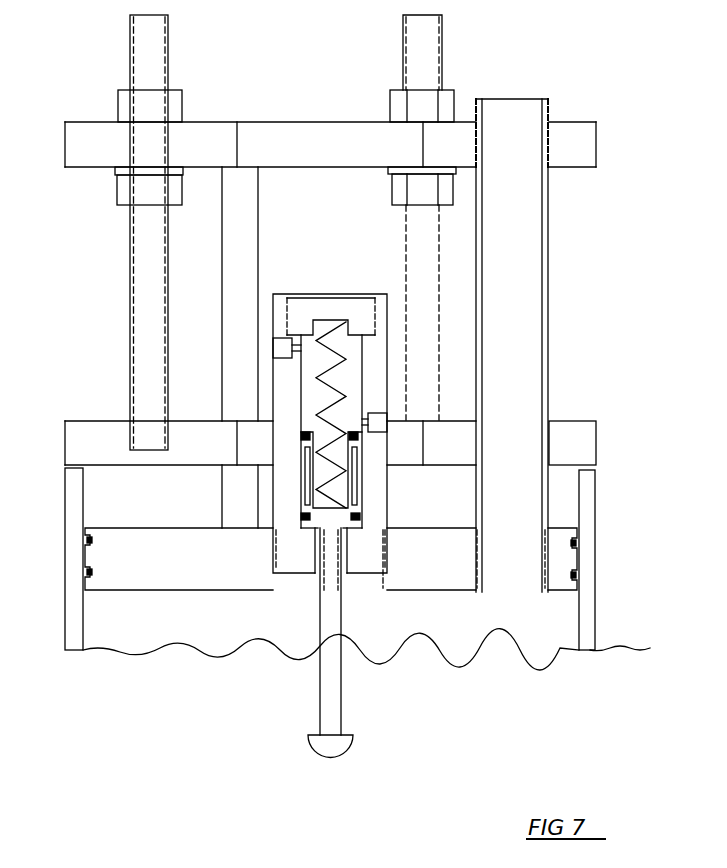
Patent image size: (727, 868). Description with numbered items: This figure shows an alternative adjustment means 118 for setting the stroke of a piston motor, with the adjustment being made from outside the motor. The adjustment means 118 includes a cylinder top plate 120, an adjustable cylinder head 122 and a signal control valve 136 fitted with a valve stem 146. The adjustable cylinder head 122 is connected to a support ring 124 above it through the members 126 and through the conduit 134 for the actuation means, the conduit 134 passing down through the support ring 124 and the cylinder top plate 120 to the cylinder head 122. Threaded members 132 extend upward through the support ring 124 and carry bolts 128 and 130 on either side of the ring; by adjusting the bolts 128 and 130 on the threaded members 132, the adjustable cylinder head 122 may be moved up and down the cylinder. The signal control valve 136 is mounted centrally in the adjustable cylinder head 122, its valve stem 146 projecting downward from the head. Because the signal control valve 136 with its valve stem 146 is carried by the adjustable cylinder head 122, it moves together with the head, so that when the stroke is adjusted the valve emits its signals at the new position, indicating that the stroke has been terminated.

The alternative adjustment means 118 is at (580, 314).
The cylinder top plate 120 is at (177, 452).
The adjustable cylinder head 122 is at (182, 567).
The support ring 124 is at (88, 138).
The members 126 is at (242, 247).
The bolts 128 is at (127, 197).
The bolts 130 is at (173, 98).
The threaded members 132 is at (150, 65).
The conduit for the actuation means 134 is at (548, 108).
The signal control valve 136 is at (318, 307).
The valve stem 146 is at (329, 689).